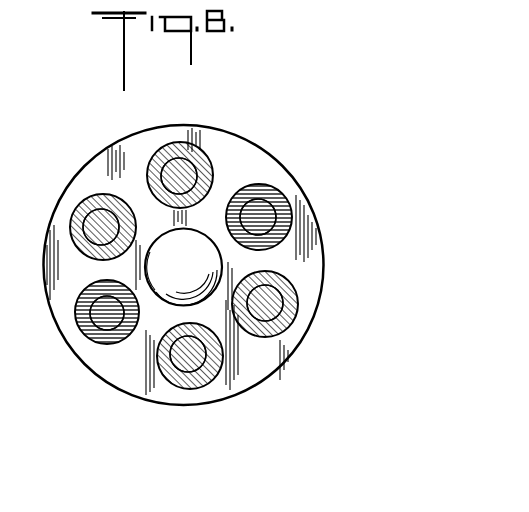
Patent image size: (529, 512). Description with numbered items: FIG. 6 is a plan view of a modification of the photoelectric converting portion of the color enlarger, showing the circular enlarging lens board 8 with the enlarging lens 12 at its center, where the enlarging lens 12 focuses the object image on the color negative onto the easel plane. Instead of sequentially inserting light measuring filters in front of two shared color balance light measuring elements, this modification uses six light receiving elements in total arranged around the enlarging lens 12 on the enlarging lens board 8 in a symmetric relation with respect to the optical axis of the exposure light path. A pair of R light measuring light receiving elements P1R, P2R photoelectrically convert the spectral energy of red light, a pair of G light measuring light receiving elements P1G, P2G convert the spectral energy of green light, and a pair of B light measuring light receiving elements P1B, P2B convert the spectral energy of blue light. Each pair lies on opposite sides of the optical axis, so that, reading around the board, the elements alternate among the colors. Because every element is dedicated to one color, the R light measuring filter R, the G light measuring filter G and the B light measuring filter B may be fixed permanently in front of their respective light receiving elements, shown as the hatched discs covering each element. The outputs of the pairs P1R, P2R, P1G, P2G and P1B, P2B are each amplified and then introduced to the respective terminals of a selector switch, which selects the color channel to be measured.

The enlarging lens board 8 is at (310, 214).
The enlarging lens 12 is at (186, 277).
The R light measuring filter R is at (90, 196).
The G light measuring filter G is at (256, 186).
The B light measuring filter B is at (183, 144).
The B light measuring light receiving element P1B is at (199, 164).
The B light measuring light receiving element P2B is at (203, 363).
The R light measuring light receiving element P1R is at (262, 338).
The R light measuring light receiving element P2R is at (87, 220).
The G light measuring light receiving element P1G is at (272, 213).
The G light measuring light receiving element P2G is at (108, 328).